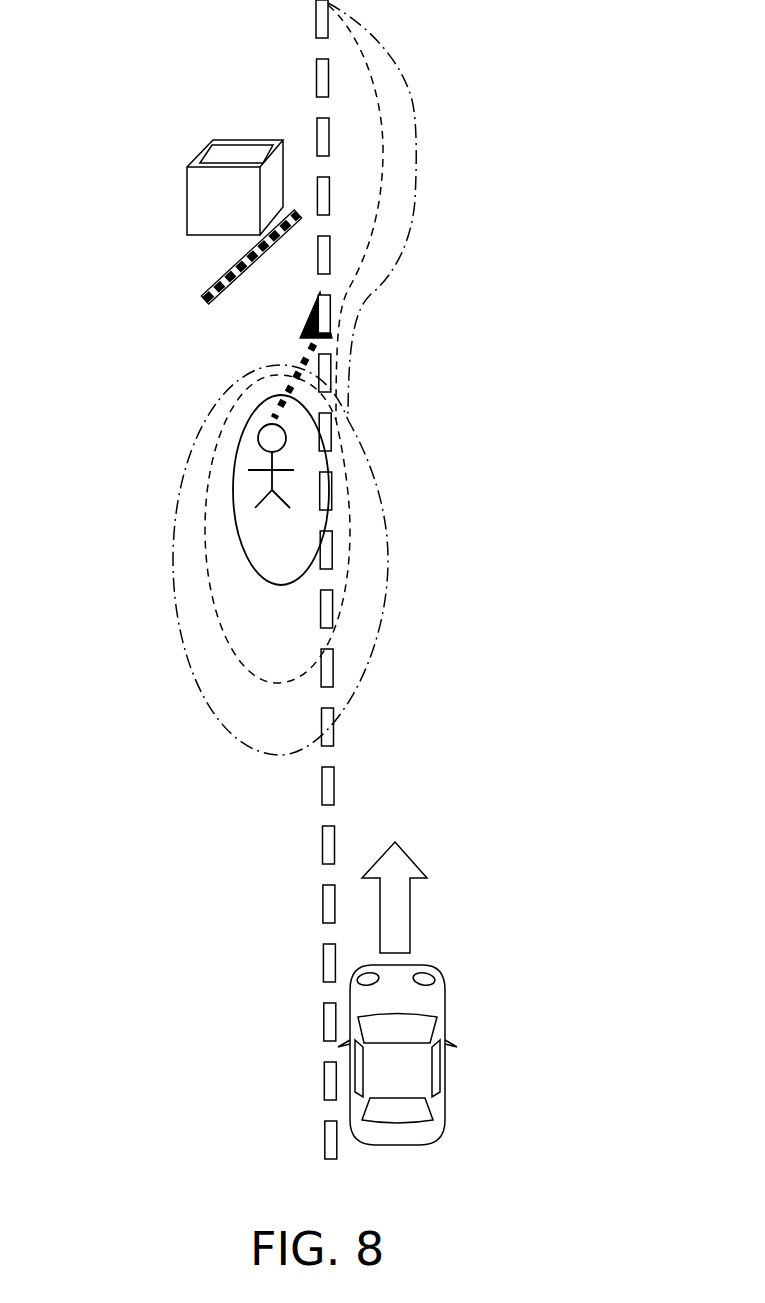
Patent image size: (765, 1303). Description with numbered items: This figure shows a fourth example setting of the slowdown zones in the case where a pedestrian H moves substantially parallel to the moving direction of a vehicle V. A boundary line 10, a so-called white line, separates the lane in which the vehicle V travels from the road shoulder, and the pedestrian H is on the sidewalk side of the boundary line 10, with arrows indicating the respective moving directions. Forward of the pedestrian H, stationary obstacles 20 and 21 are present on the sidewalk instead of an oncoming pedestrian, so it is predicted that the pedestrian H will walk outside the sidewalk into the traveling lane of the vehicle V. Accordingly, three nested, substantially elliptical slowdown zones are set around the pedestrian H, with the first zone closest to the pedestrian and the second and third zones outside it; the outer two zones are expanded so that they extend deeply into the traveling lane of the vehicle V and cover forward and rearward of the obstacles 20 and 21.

The boundary line 10 is at (325, 841).
The stationary obstacle 20 is at (195, 201).
The stationary obstacle 21 is at (222, 268).
The pedestrian H is at (258, 436).
The vehicle V is at (445, 1078).